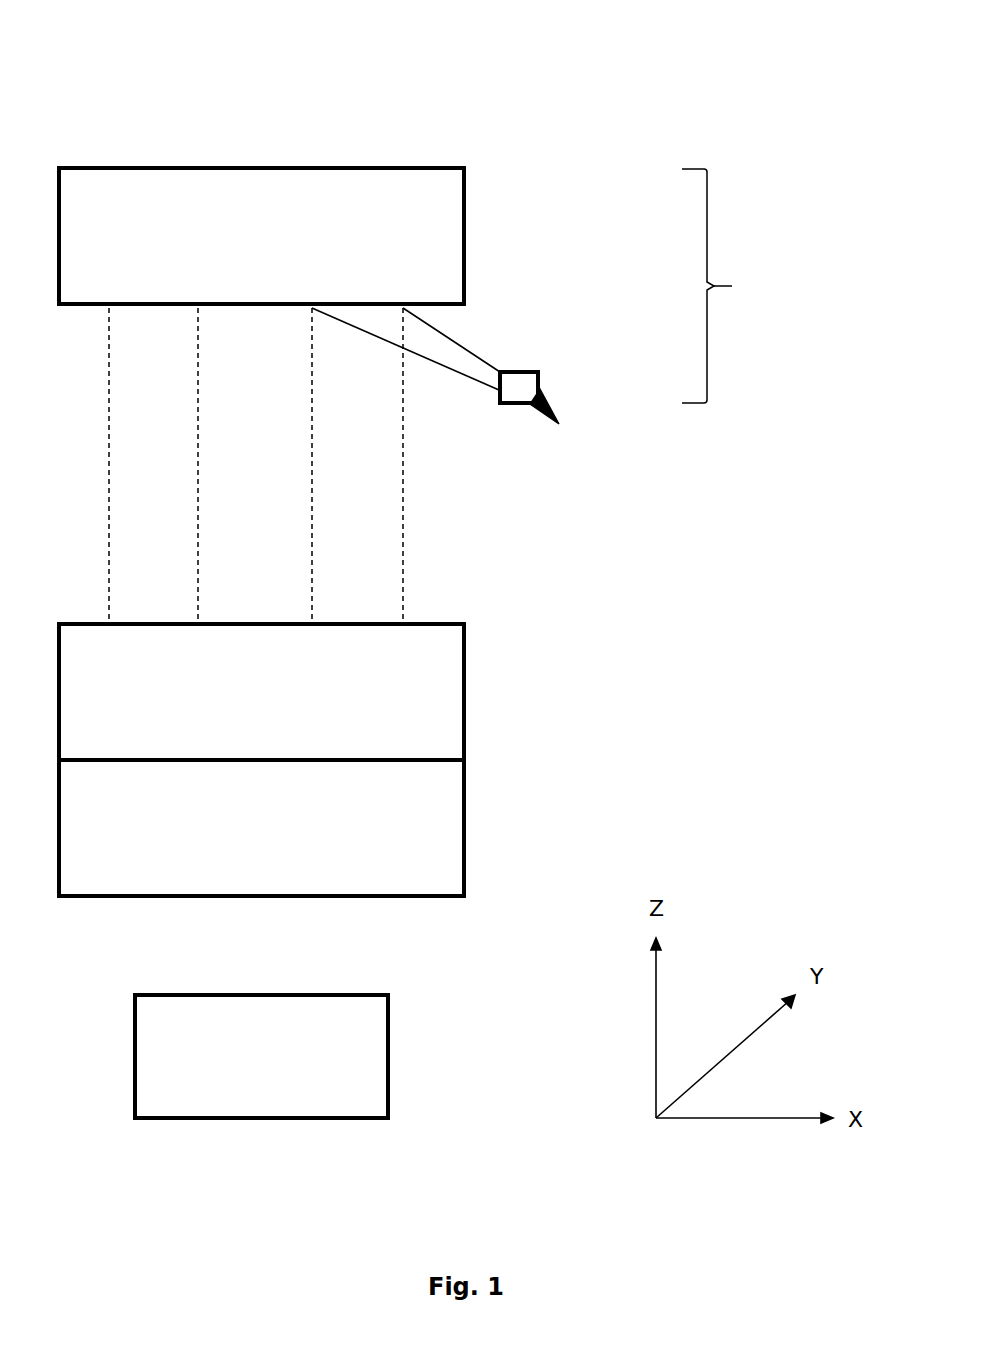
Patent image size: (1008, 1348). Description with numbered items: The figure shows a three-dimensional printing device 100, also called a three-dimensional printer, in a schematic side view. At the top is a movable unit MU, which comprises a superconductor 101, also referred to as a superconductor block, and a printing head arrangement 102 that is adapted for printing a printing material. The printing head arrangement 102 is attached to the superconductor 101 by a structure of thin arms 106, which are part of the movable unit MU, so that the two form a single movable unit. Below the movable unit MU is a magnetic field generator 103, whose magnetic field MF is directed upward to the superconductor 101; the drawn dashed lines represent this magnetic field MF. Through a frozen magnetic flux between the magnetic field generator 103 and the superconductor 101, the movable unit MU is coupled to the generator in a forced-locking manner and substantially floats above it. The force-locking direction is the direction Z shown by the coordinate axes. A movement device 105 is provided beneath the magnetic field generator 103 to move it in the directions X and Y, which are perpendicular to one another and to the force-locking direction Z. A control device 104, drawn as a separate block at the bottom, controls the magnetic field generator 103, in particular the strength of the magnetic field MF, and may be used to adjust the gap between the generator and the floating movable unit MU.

The 3D printing device 100 is at (390, 85).
The superconductor 101 is at (466, 230).
The printing head arrangement 102 is at (541, 380).
The magnetic field generator 103 is at (466, 690).
The control device 104 is at (390, 1062).
The movement device 105 is at (466, 845).
The thin arms 106 is at (467, 342).
The movable unit MU is at (735, 286).
The magnetic field MF is at (403, 540).